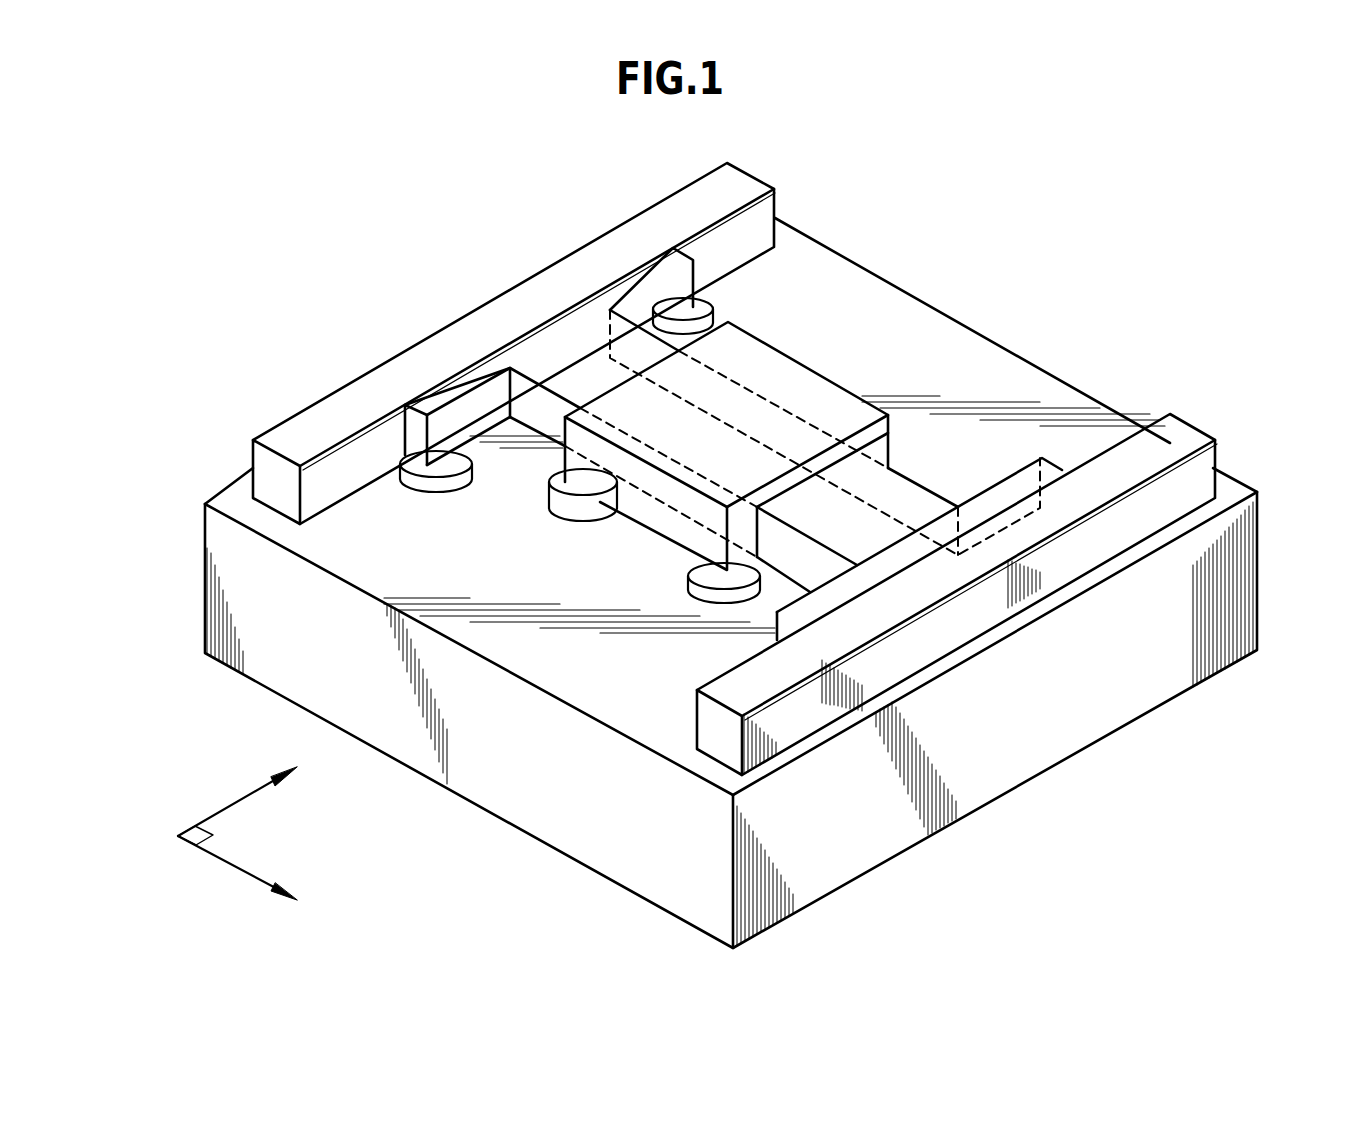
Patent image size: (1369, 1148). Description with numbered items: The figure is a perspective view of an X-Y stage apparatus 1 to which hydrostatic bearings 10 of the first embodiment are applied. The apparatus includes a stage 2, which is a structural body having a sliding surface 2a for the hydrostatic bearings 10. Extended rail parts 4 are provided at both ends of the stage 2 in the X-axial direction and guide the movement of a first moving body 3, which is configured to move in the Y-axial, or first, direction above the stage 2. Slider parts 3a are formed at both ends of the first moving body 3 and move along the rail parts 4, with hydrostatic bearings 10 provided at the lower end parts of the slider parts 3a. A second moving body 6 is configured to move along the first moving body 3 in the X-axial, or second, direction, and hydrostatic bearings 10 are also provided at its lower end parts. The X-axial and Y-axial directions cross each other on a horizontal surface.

The X-Y stage apparatus 1 is at (270, 227).
The stage 2 is at (240, 562).
The sliding surface 2a is at (848, 284).
The first moving body 3 is at (585, 357).
The slider parts 3a is at (434, 403).
The rail parts 4 is at (345, 414).
The second moving body 6 is at (805, 384).
The hydrostatic bearings 10 is at (694, 320).